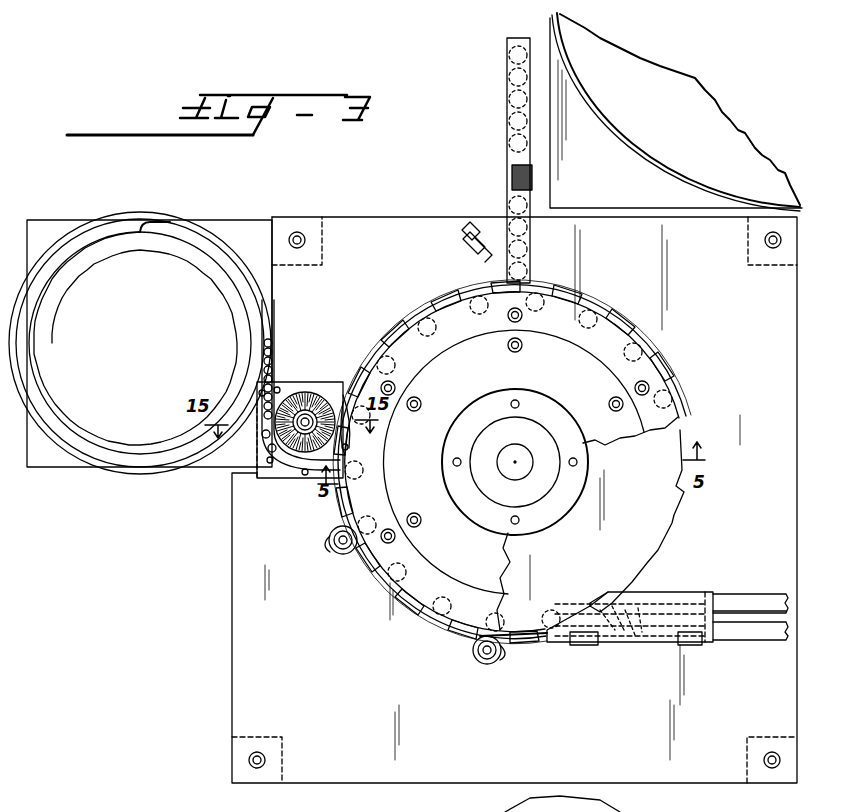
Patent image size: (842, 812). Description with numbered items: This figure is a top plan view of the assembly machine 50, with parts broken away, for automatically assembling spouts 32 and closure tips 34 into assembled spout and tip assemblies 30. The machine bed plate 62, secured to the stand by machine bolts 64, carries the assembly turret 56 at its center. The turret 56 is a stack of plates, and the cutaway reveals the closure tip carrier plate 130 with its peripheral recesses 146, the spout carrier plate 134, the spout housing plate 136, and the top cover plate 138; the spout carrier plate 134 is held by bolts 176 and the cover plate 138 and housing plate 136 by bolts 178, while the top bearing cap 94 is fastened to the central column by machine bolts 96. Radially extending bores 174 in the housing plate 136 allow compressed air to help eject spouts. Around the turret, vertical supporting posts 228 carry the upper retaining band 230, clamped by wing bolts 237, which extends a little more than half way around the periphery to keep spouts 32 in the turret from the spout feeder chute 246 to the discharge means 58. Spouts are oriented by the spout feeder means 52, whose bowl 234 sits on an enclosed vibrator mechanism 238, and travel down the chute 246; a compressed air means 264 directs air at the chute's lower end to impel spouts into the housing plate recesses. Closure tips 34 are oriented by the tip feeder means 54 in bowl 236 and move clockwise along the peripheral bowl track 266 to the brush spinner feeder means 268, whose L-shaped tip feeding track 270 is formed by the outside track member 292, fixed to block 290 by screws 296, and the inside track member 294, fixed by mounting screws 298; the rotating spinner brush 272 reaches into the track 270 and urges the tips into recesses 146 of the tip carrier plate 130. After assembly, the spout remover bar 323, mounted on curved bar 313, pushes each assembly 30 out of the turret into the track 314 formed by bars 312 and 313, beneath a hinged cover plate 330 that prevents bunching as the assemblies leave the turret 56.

The assembled spout and tip assembly 30 is at (642, 632).
The spout 32 is at (510, 82).
The closure tip 34 is at (286, 375).
The assembly machine 50 is at (212, 490).
The spout hopper and feeder means 52 is at (632, 40).
The closure tip hopper and feeder means 54 is at (140, 208).
The assembly turret 56 is at (704, 398).
The discharge means 58 is at (612, 650).
The machine bed plate 62 is at (472, 783).
The machine bolts 64 is at (297, 248).
The top bearing cap 94 is at (553, 413).
The machine bolts 96 is at (448, 467).
The closure tip carrier plate 130 is at (655, 530).
The spout carrier plate 134 is at (425, 300).
The spout housing plate 136 is at (394, 316).
The top cover plate 138 is at (462, 332).
The recesses in tip carrier plate 146 is at (676, 508).
The radially extending bores 174 is at (562, 804).
The bolts 176 is at (513, 352).
The bolts 178 is at (522, 316).
The vertical supporting posts 228 is at (352, 555).
The upper retaining band 230 is at (388, 342).
The spout feeder bowl 234 is at (700, 88).
The closure tip feeder bowl 236 is at (104, 468).
The wing bolts 237 is at (335, 552).
The vibrator mechanism 238 is at (635, 194).
The spout feeder chute 246 is at (507, 145).
The compressed air means 264 is at (487, 235).
The peripheral bowl track 266 is at (262, 338).
The brush spinner feeder means 268 is at (307, 392).
The tip feeding track 270 is at (306, 476).
The spinner brush 272 is at (320, 382).
The enlarged block 290 is at (340, 386).
The outside track member 292 is at (262, 480).
The inside track member 294 is at (272, 433).
The screws 296 is at (265, 400).
The mounting screws 298 is at (292, 382).
The curved bar 312 is at (742, 634).
The curved bar 313 is at (732, 596).
The track 314 is at (762, 604).
The spout remover bar 323 is at (604, 590).
The hinged cover plate 330 is at (699, 592).